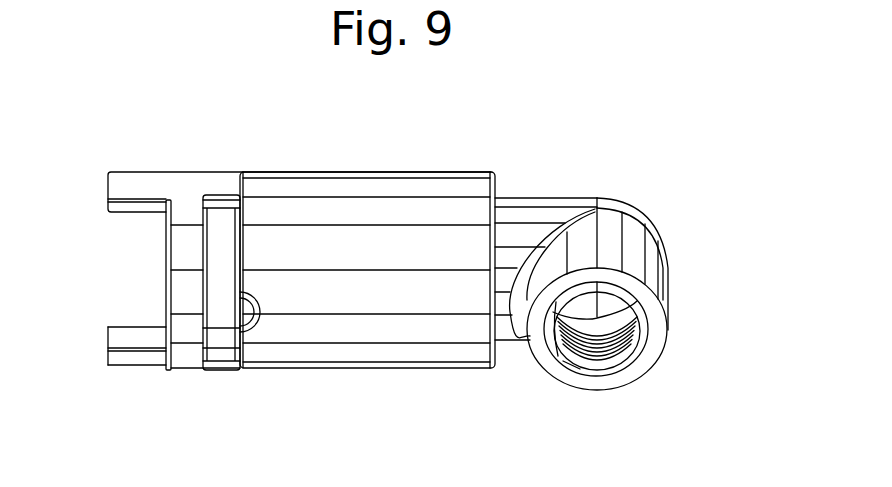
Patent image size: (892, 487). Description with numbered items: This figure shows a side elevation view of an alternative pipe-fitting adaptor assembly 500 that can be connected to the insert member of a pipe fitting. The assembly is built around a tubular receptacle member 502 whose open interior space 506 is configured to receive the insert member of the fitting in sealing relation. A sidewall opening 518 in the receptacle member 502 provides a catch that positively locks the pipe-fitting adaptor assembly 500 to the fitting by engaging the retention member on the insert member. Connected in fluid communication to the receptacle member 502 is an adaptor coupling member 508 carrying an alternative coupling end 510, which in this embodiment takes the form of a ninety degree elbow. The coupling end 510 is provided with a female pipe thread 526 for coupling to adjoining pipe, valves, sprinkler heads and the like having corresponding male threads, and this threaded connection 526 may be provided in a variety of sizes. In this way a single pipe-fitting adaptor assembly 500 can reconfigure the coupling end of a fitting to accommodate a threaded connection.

The pipe-fitting adaptor assembly 500 is at (318, 141).
The tubular receptacle member 502 is at (318, 208).
The open interior space 506 is at (231, 233).
The adaptor coupling member 508 is at (535, 195).
The adaptor coupling end 510 is at (627, 253).
The sidewall opening 518 is at (205, 323).
The female pipe thread 526 is at (612, 360).